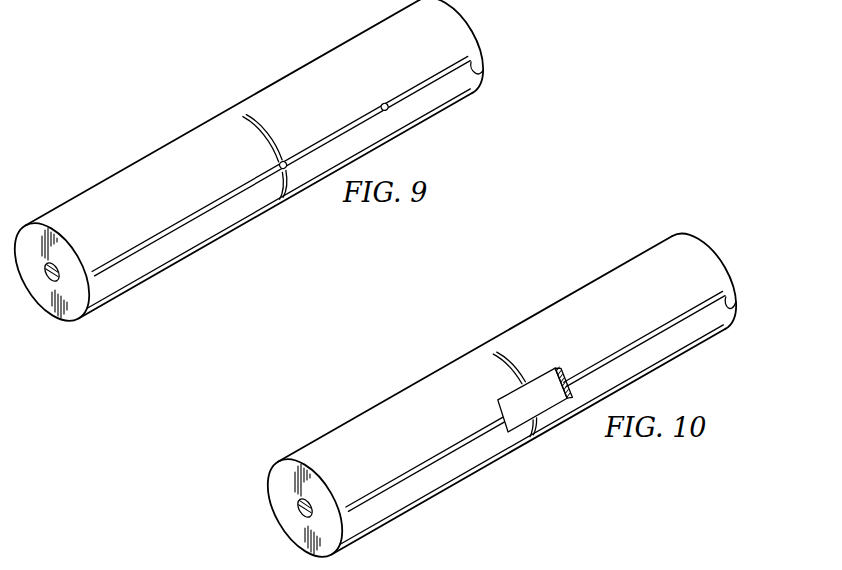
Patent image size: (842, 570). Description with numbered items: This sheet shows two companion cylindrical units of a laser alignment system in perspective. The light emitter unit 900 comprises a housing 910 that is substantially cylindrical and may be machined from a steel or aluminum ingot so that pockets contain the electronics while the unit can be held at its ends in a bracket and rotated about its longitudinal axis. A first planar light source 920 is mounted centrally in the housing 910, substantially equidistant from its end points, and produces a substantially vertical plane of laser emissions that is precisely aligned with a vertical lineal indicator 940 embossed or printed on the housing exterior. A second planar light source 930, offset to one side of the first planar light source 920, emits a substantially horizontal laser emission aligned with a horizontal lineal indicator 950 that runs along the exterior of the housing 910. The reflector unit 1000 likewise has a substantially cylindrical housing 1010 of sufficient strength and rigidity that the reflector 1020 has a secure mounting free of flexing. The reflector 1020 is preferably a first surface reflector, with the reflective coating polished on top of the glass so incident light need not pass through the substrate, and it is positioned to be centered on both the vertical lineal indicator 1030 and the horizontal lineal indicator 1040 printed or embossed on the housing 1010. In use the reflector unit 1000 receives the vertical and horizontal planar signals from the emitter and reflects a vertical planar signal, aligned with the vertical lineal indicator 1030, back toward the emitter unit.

In FIG. 9, the light emitter unit 900 is at (129, 108).
In FIG. 9, the housing 910 is at (86, 195).
In FIG. 9, the first planar light source 920 is at (271, 157).
In FIG. 9, the second planar light source 930 is at (370, 98).
In FIG. 9, the vertical lineal indicator 940 is at (267, 121).
In FIG. 9, the horizontal lineal indicator 950 is at (484, 70).
In FIG. 10, the reflector unit 1000 is at (366, 354).
In FIG. 10, the housing 1010 is at (337, 431).
In FIG. 10, the reflector 1020 is at (505, 396).
In FIG. 10, the vertical lineal indicator 1030 is at (517, 362).
In FIG. 10, the horizontal lineal indicator 1040 is at (736, 302).